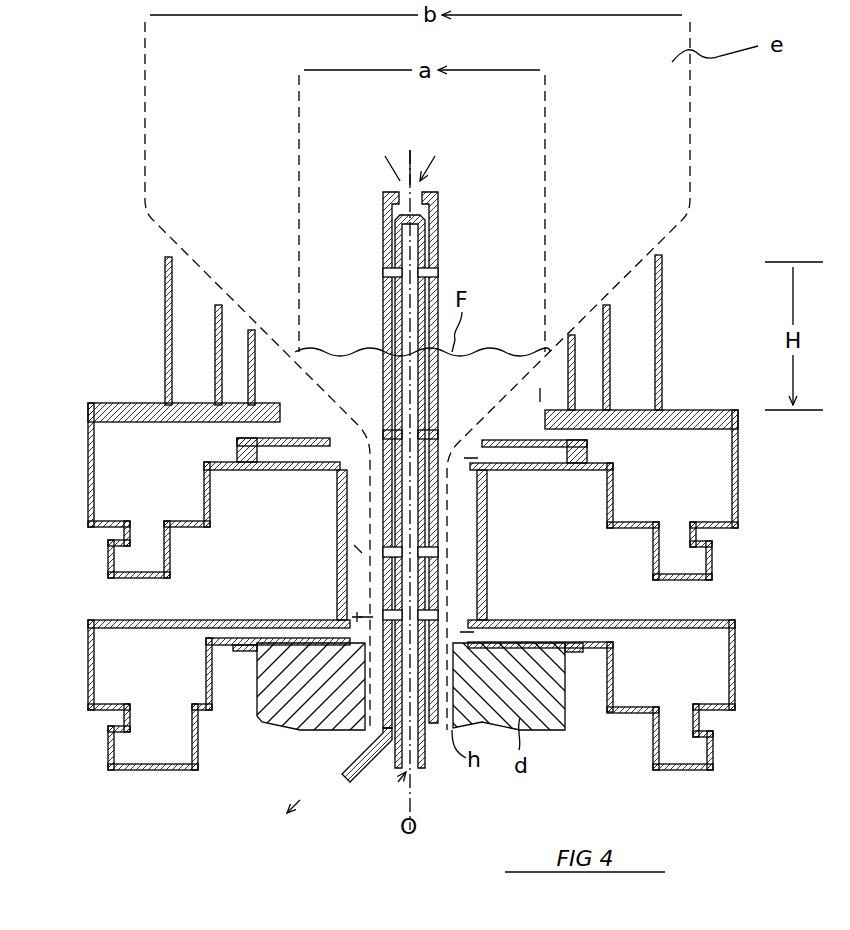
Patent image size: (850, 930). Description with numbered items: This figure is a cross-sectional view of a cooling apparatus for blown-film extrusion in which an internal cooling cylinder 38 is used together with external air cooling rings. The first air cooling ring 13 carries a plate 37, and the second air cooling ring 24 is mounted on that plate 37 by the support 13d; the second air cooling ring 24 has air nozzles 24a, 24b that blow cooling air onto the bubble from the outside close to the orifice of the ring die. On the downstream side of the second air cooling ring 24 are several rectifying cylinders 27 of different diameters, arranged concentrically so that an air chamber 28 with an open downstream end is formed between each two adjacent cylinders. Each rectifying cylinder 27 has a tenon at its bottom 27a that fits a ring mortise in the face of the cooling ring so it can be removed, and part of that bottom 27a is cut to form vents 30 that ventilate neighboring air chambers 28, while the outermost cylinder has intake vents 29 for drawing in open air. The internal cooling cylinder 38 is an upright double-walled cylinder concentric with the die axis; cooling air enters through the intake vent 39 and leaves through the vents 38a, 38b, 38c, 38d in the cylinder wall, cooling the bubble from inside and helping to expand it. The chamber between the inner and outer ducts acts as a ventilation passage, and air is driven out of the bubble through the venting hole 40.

The air cooling ring 13 is at (88, 672).
The support 13d is at (487, 536).
The second air cooling ring 24 is at (88, 505).
The air nozzle 24a is at (284, 382).
The air nozzle 24b is at (326, 470).
The rectifying cylinder 27 is at (572, 334).
The bottom of rectifying cylinder 27a is at (597, 430).
The air chamber 28 is at (208, 320).
The intake vent 29 is at (660, 416).
The vent 30 is at (598, 412).
The plate 37 is at (490, 620).
The internal cooling cylinder 38 is at (438, 218).
The vent 38a is at (392, 614).
The vent 38b is at (385, 551).
The vent 38c is at (384, 434).
The vent 38d is at (383, 272).
The intake vent 39 is at (412, 769).
The venting hole 40 is at (344, 782).